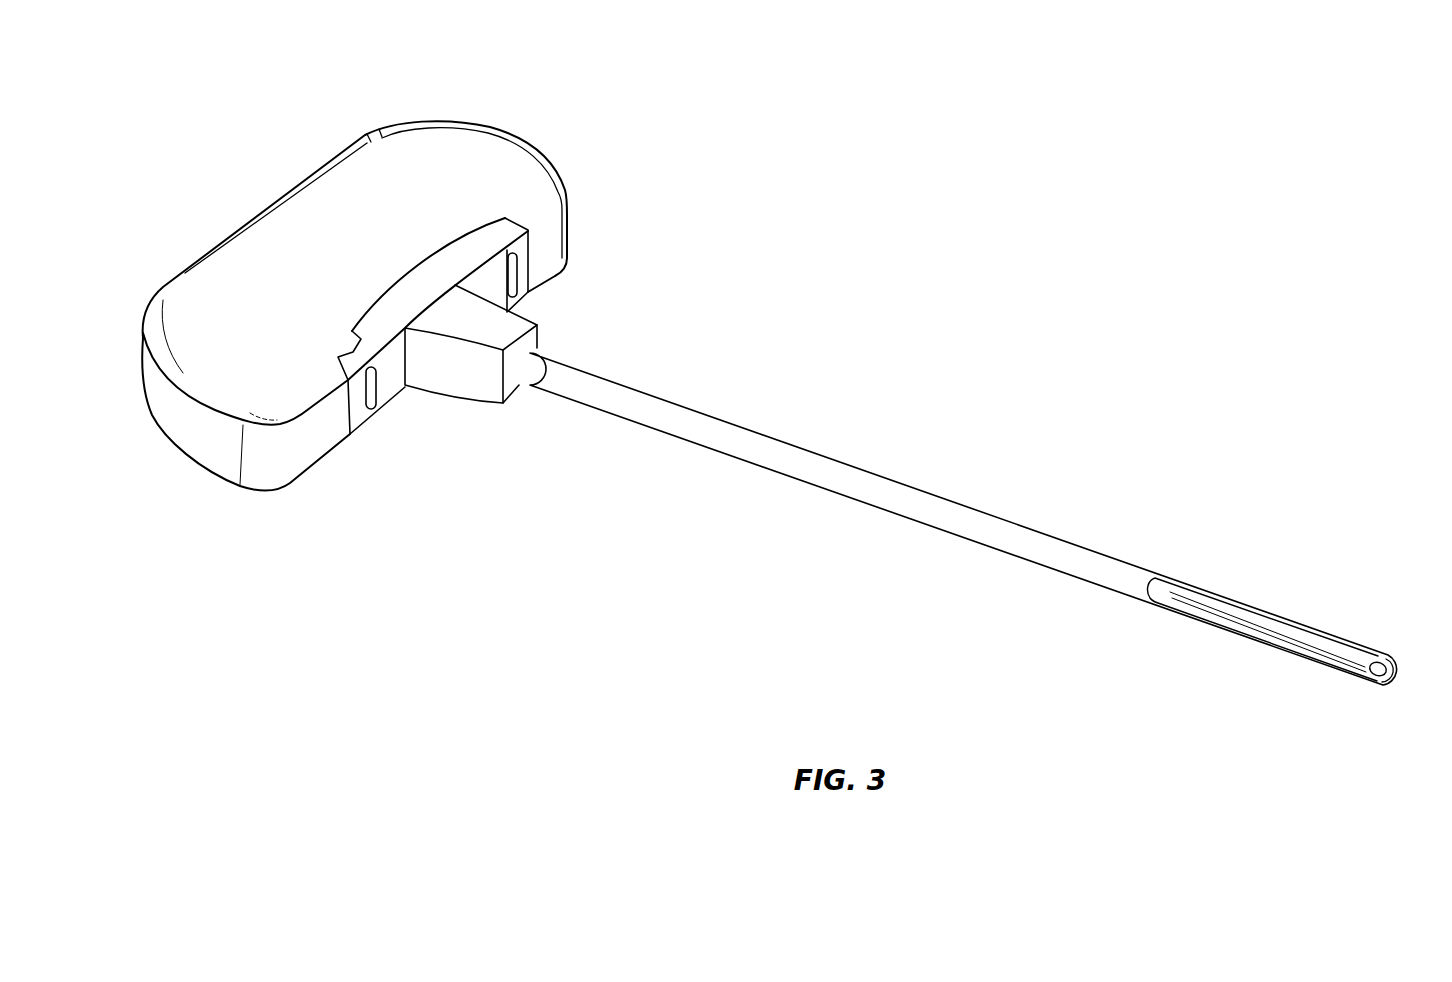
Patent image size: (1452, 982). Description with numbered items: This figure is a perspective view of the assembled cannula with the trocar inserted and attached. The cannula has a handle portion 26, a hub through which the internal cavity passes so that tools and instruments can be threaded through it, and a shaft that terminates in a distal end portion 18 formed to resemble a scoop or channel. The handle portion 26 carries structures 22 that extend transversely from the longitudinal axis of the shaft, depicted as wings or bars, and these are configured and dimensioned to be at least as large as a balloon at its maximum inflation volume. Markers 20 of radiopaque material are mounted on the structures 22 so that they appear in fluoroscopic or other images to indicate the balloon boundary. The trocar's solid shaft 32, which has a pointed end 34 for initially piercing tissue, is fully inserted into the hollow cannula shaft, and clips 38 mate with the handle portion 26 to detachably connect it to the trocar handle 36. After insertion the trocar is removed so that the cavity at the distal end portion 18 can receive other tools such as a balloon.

The distal end portion 18 is at (1217, 648).
The markers 20 is at (514, 274).
The structures 22 is at (534, 247).
The handle portion 26 is at (484, 396).
The solid shaft 32 is at (1174, 593).
The pointed end 34 is at (1380, 668).
The trocar handle 36 is at (481, 166).
The clips 38 is at (348, 347).